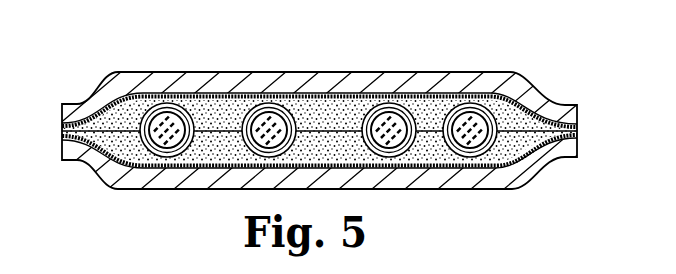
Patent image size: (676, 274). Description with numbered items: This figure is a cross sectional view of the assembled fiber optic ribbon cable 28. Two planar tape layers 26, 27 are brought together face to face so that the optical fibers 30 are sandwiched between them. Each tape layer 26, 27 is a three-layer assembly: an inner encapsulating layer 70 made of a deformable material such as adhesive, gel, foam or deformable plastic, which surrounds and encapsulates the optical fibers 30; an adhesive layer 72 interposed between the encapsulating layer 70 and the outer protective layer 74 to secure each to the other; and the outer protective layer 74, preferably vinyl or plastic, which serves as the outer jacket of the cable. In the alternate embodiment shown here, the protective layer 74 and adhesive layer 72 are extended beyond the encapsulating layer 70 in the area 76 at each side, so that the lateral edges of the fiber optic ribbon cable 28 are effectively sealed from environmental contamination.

The tape layer 26 is at (173, 71).
The tape layer 27 is at (103, 177).
The fiber optic ribbon cable 28 is at (457, 48).
The optical fibers 30 is at (240, 104).
The inner encapsulating layer 70 is at (520, 153).
The adhesive layer 72 is at (577, 140).
The outer protective layer 74 is at (562, 110).
The extended edge area 76 is at (73, 103).